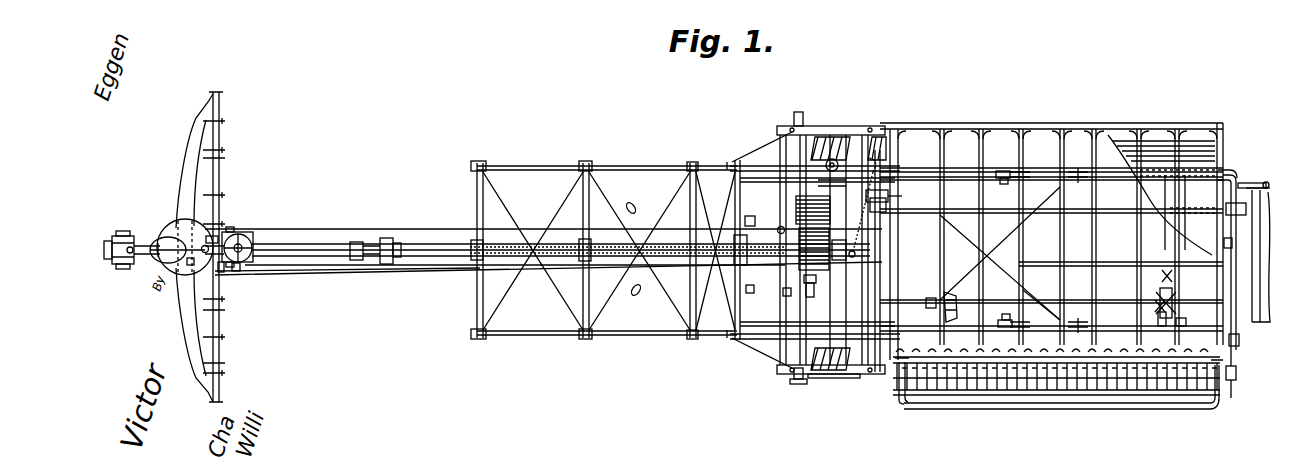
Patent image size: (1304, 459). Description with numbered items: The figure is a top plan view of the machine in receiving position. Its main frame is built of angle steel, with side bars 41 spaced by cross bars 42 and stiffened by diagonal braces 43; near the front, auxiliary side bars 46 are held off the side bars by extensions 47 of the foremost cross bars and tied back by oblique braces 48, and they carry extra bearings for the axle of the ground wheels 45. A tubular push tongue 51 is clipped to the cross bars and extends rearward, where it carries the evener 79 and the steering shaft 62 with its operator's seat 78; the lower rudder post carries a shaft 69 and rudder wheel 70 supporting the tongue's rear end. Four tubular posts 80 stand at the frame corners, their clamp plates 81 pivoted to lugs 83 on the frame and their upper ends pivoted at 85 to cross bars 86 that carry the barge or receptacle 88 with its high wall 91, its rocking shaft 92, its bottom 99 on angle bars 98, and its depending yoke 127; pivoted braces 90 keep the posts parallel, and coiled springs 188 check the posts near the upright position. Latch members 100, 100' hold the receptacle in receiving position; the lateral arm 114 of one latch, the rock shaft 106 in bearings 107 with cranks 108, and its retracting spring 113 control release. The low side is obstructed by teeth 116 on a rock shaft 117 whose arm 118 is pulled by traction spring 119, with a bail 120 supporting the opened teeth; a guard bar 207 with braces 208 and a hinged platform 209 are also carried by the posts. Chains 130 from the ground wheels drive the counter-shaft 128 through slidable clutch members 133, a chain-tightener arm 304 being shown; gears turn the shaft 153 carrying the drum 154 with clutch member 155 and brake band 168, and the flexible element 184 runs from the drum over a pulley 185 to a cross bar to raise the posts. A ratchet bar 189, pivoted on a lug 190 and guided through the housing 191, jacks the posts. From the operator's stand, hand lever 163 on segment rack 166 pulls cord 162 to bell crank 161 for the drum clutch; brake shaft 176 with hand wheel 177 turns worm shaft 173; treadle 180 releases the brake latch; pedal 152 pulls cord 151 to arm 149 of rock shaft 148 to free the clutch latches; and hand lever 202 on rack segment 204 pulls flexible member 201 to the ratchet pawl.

The rudder wheel 70 is at (150, 262).
The steering shaft 62 is at (136, 243).
The seat 78 is at (160, 259).
The evener 79 is at (175, 193).
The treadle 180 is at (208, 232).
The hand lever 163 is at (218, 237).
The foot lever or pedal 152 is at (192, 281).
The hand lever 202 is at (233, 268).
The rack segment 204 is at (222, 266).
The segment rack 166 is at (238, 235).
The hand wheel 177 is at (252, 232).
The brake shaft 176 is at (266, 243).
The flexible element or pull cord 162 is at (382, 229).
The shaft 173 is at (340, 252).
The pulley 185 is at (388, 265).
The push tongue 51 is at (322, 262).
The flexible element or pull cord 151 is at (298, 277).
The flexible member 201 is at (425, 268).
The side bars 41 is at (627, 166).
The posts 80 is at (658, 166).
The lugs 83 is at (477, 169).
The clamp plates 81 is at (490, 165).
The diagonal braces 43 is at (508, 210).
The ratchet bar 189 is at (560, 294).
The retracting spring 113 is at (616, 212).
The housing 191 is at (591, 262).
The cross bars 42 is at (476, 300).
The obliquely disposed braces 48 is at (766, 142).
The extensions 47 is at (760, 135).
The shaft 69 is at (742, 221).
The bell crank 161 is at (745, 221).
The clutch member 155 is at (777, 229).
The rock shaft 148 is at (745, 297).
The arm or crank 149 is at (784, 291).
The slidable clutch members 133 is at (805, 157).
The auxiliary side bars 46 is at (835, 130).
The ground wheels 45 is at (855, 155).
The counter-shaft 128 is at (800, 380).
The arm 304 is at (832, 378).
The drum 154 is at (824, 220).
The brake band 168 is at (818, 273).
The shaft 153 is at (812, 283).
The braces 90 is at (840, 204).
The flexible element 184 is at (848, 251).
The cross bars 86 is at (888, 239).
The pivotal connections 85 is at (892, 190).
The high wall 91 is at (1072, 129).
The barge or receptacle 88 is at (1003, 152).
The rocking bar or shaft 92 is at (999, 212).
The yoke 127 is at (1036, 266).
The rock shaft 106 is at (1047, 303).
The bar 207 is at (1048, 328).
The coiled spring 188 is at (1004, 172).
The angle bars 98 is at (900, 270).
The cranks 108 is at (952, 278).
The latch member 100 is at (923, 295).
The lug 190 is at (958, 318).
The bottom 99 is at (1165, 228).
The bearings 107 is at (1168, 297).
The laterally extending arm 114 is at (1164, 327).
The latch member 100' is at (1195, 314).
The traction spring 119 is at (920, 338).
The rock shaft 117 is at (955, 391).
The teeth 116 is at (1013, 390).
The bail or bracket 120 is at (1085, 396).
The arm 118 is at (891, 402).
The chains 130 is at (1239, 339).
The braces 208 is at (1237, 390).
The platform 209 is at (1267, 194).